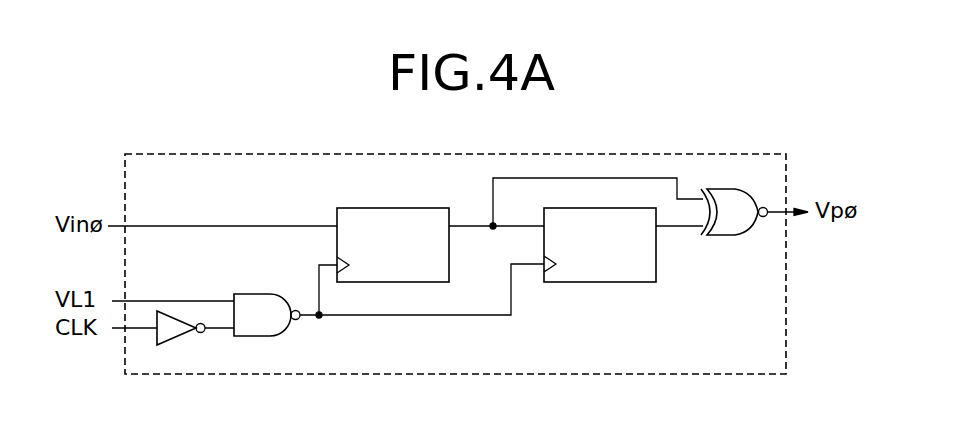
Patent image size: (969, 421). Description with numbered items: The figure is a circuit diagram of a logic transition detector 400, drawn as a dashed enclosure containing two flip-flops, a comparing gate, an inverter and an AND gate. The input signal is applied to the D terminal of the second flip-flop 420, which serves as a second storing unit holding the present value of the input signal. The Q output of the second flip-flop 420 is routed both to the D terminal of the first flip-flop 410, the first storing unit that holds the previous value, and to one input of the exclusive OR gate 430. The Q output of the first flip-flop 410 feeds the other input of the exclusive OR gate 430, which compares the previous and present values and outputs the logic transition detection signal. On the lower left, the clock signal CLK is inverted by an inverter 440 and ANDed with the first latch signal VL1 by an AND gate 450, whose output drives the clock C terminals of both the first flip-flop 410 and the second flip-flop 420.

The logic transition detector 400 is at (583, 153).
The first flip-flop 410 is at (588, 283).
The second flip-flop 420 is at (397, 206).
The exclusive OR gate 430 is at (734, 227).
The inverter 440 is at (181, 341).
The AND gate 450 is at (266, 299).